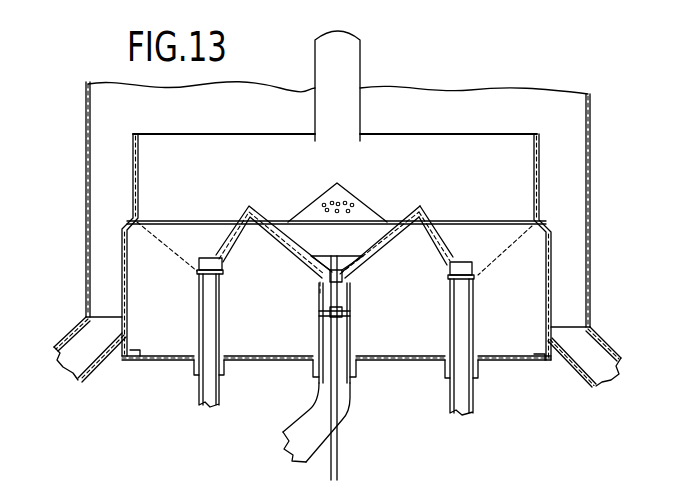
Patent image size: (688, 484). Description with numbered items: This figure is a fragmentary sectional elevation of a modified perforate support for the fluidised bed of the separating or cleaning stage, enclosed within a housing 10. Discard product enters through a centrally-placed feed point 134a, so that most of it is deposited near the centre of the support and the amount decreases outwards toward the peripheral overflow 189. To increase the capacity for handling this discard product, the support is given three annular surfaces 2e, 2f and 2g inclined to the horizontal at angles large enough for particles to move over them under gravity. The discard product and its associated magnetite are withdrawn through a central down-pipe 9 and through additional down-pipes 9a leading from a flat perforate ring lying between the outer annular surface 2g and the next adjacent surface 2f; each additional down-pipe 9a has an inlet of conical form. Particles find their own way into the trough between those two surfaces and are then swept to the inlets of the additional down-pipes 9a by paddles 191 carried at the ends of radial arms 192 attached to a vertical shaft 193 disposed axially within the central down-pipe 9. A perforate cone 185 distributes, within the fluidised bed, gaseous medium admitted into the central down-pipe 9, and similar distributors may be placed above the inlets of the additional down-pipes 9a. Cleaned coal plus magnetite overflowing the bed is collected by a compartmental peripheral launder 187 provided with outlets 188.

The housing 10 is at (87, 142).
The compartmental peripheral launder 187 is at (98, 200).
The outlets 188 is at (75, 331).
The peripheral overflow 189 is at (481, 137).
The centrally-placed feed point 134a is at (356, 61).
The perforate cone 185 is at (322, 194).
The radial arms 192 is at (334, 233).
The annular surface 2e is at (392, 252).
The annular surface 2f is at (441, 264).
The annular surface 2g is at (498, 258).
The paddles 191 is at (204, 256).
The additional down-pipes 9a is at (199, 390).
The central down-pipe 9 is at (312, 414).
The vertical shaft 193 is at (340, 413).